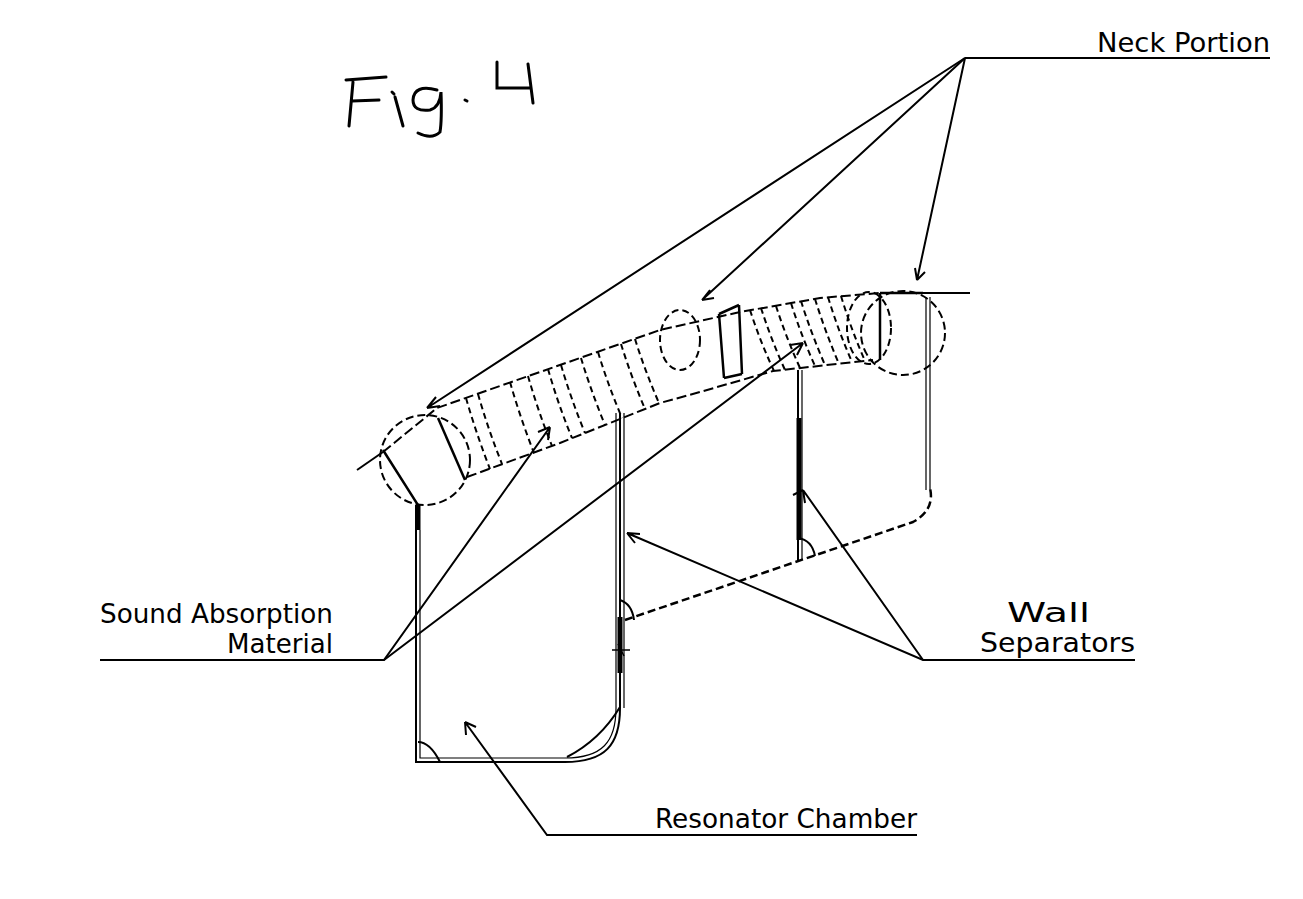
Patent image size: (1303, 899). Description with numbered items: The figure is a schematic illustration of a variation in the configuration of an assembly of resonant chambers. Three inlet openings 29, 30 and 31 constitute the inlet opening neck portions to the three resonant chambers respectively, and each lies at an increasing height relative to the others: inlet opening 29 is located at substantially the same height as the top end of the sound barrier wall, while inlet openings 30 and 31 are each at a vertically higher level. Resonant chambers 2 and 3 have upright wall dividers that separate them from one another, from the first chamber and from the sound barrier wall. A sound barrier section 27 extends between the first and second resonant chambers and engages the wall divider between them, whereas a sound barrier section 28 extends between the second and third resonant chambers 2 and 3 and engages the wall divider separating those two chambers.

The sound barrier section 27 is at (560, 375).
The sound barrier section 28 is at (798, 303).
The inlet opening 29 is at (422, 457).
The inlet opening 30 is at (700, 340).
The inlet opening 31 is at (902, 310).
The resonant chamber 2 is at (655, 572).
The resonant chamber 3 is at (905, 500).